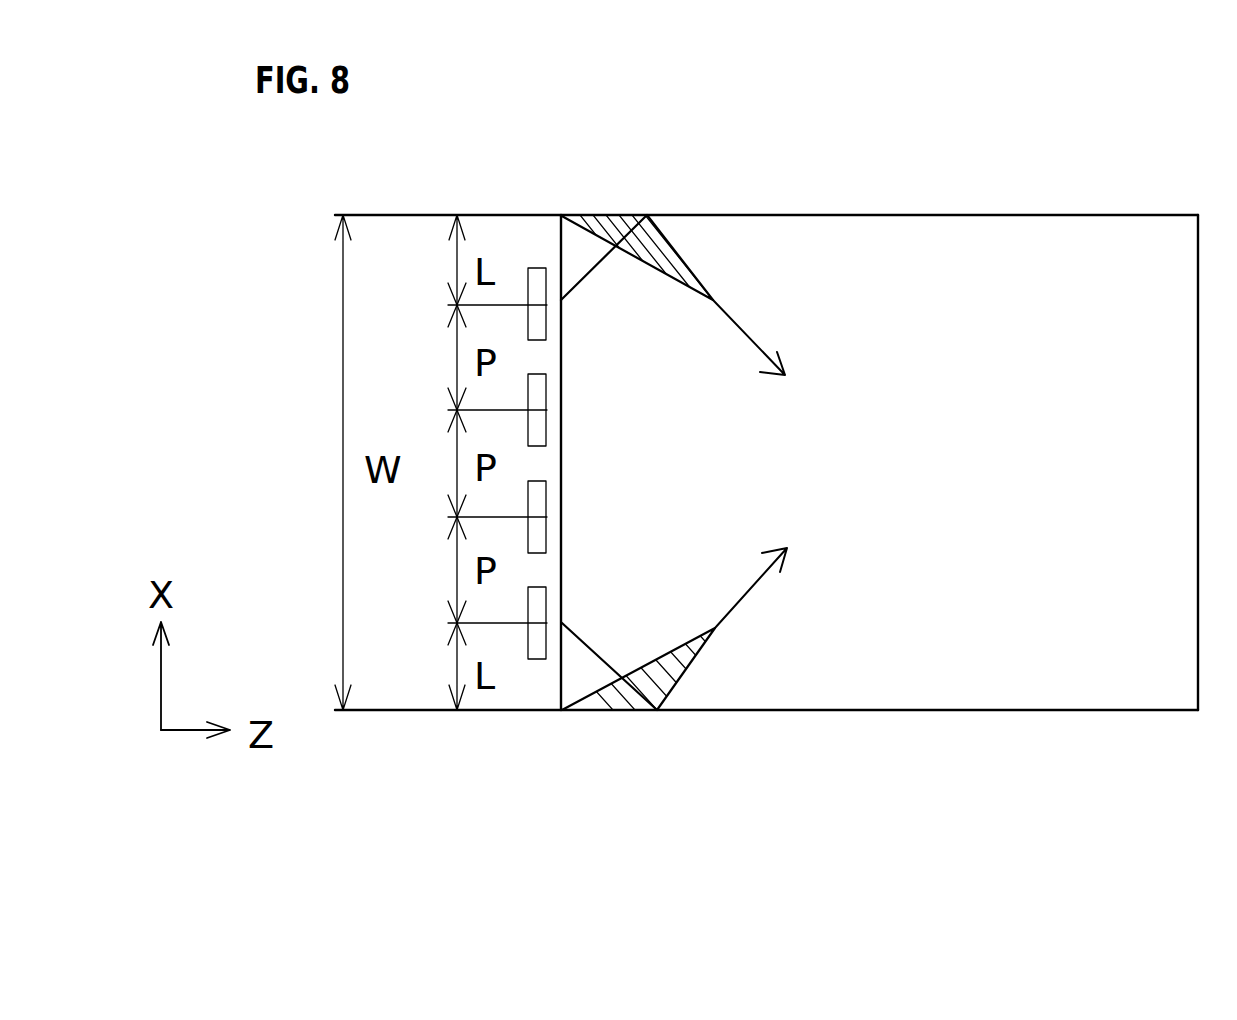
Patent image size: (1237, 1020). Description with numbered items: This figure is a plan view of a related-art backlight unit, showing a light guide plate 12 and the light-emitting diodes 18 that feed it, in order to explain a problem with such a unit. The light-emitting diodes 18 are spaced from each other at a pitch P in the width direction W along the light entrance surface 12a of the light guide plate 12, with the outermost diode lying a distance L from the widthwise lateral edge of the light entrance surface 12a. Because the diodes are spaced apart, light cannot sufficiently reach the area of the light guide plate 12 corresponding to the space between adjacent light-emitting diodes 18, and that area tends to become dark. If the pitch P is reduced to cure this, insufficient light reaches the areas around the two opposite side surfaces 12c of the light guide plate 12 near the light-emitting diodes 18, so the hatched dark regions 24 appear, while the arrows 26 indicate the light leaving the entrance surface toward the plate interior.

The light guide plate 12 is at (880, 633).
The light entrance surface 12a is at (558, 663).
The side surfaces 12c is at (1072, 213).
The light-emitting diodes 18 is at (533, 293).
The dark regions 24 is at (650, 232).
The light beam 26 is at (752, 335).